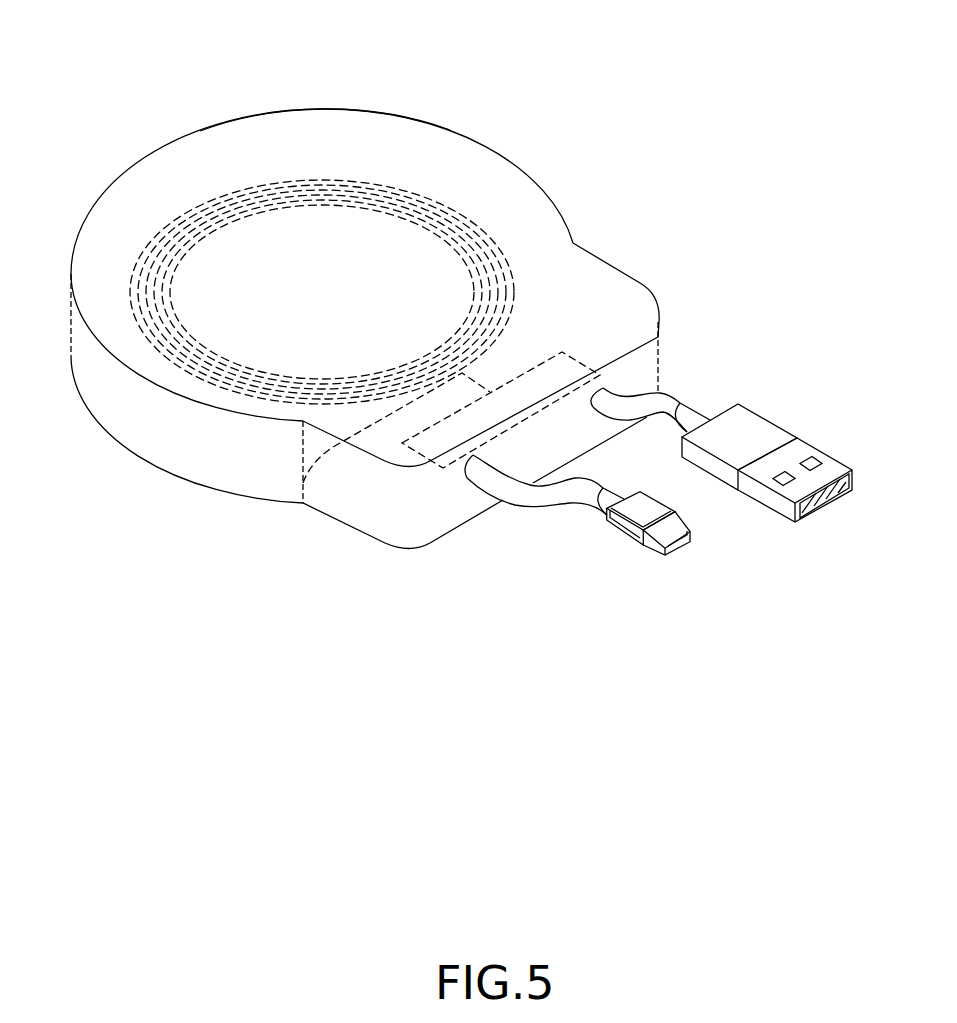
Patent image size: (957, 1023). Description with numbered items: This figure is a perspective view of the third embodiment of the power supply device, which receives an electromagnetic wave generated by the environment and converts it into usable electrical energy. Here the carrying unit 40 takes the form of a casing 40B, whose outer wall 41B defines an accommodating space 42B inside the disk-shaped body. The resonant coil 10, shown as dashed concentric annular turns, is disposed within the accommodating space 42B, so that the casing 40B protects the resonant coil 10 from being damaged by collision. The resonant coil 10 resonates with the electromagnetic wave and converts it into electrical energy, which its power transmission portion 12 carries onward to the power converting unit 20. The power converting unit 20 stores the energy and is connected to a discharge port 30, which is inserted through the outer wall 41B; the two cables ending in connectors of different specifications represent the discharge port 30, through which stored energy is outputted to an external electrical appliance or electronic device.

The resonant coil 10 is at (148, 238).
The power transmission portion 12 is at (302, 484).
The power converting unit 20 is at (569, 367).
The discharge port 30 is at (749, 397).
The carrying unit 40 is at (322, 211).
The casing 40B is at (188, 133).
The outer wall 41B is at (342, 118).
The accommodating space 42B is at (443, 175).